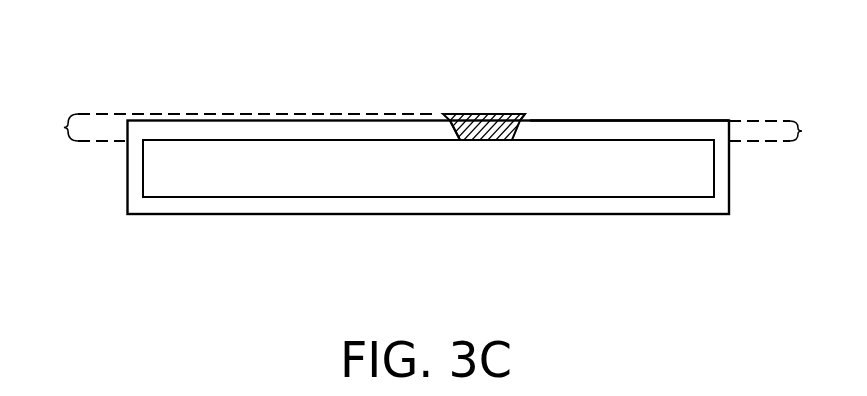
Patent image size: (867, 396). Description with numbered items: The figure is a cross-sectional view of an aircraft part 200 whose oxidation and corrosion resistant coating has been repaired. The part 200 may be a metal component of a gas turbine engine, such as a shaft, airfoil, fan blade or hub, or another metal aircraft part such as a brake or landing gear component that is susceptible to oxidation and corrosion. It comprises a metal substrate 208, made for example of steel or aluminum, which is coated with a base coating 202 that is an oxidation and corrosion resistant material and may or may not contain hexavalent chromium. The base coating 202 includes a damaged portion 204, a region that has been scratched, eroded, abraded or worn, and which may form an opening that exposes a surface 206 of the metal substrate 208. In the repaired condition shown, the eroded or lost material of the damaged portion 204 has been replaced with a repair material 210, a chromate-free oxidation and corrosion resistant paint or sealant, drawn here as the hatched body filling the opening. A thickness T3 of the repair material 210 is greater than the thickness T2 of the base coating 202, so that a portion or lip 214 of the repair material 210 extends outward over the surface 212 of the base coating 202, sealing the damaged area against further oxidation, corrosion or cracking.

The aircraft part 200 is at (430, 117).
The base coating 202 is at (665, 128).
The damaged portion 204 is at (508, 93).
The surface of metal substrate 206 is at (463, 138).
The metal substrate 208 is at (373, 184).
The repair material 210 is at (492, 127).
The surface of base coating 212 is at (607, 120).
The lip of repair material 214 is at (525, 117).
The thickness of base coating T2 is at (802, 131).
The thickness of repair material T3 is at (64, 128).